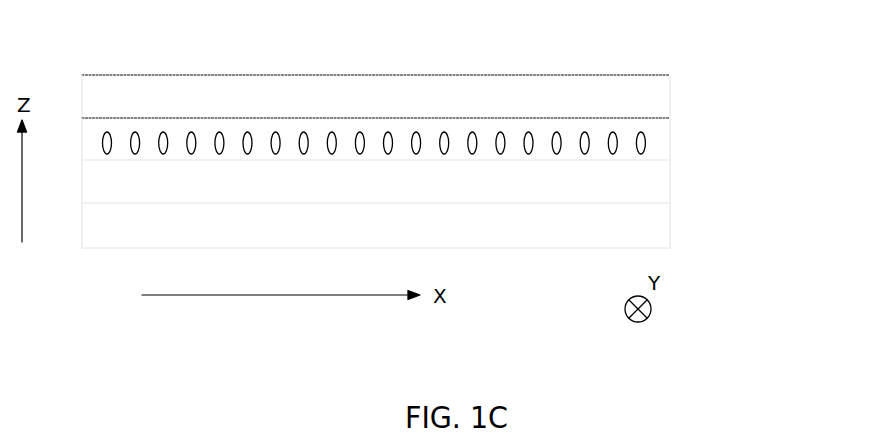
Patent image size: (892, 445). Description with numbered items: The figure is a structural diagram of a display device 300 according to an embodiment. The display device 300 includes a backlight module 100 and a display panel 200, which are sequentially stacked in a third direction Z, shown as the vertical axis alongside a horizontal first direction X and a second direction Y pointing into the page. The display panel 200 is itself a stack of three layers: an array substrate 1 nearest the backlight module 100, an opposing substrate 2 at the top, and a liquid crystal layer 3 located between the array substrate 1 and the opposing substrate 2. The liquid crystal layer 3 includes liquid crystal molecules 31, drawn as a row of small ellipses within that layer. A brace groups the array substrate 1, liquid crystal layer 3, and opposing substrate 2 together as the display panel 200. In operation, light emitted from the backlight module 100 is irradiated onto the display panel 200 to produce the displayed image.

The display device 300 is at (315, 30).
The display panel 200 is at (785, 63).
The opposing substrate 2 is at (655, 94).
The liquid crystal layer 3 is at (663, 141).
The liquid crystal molecules 31 is at (528, 147).
The array substrate 1 is at (658, 187).
The backlight module 100 is at (648, 225).